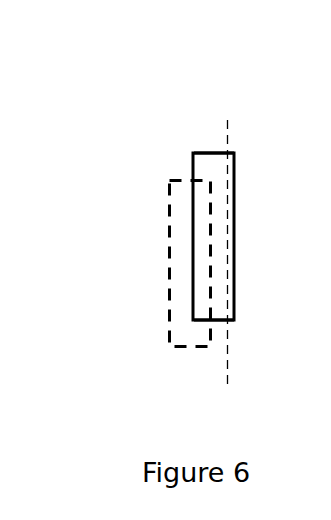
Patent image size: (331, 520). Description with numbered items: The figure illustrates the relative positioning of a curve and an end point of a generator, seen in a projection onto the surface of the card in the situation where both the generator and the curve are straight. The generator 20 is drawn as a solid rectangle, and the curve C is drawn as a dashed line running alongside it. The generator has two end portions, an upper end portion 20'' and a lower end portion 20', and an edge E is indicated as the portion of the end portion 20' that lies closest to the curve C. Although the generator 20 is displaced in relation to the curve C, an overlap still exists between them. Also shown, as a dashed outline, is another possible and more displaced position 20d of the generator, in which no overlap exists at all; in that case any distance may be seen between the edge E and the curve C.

The generator 20 is at (142, 194).
The more displaced position of the generator 20d is at (165, 223).
The end portion of the generator 20'' is at (164, 88).
The end portion of the generator 20' is at (133, 366).
The edge E is at (236, 321).
The curve C is at (237, 380).